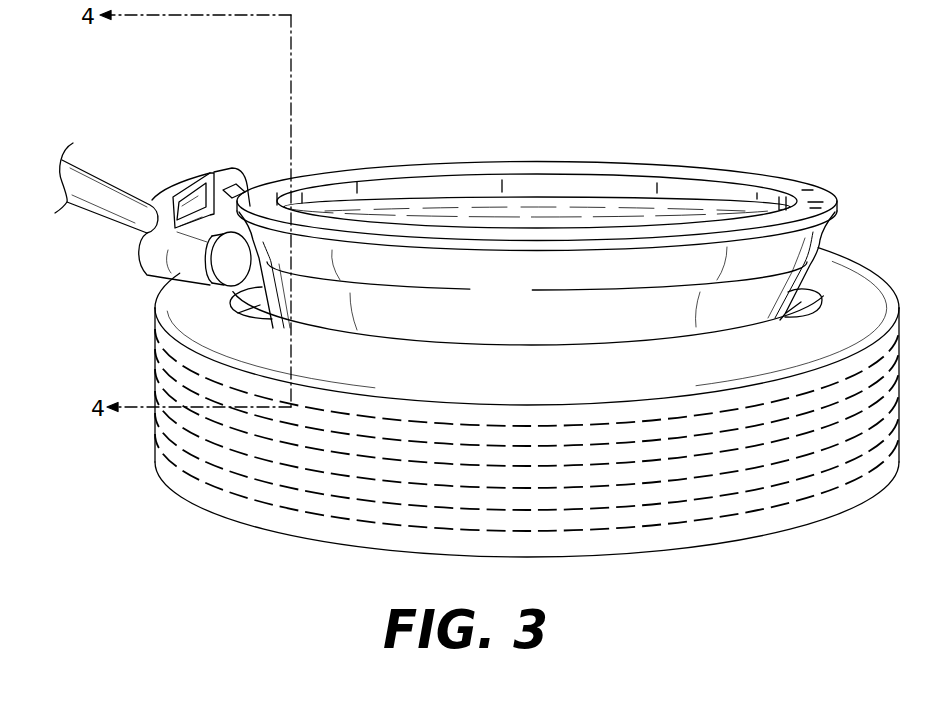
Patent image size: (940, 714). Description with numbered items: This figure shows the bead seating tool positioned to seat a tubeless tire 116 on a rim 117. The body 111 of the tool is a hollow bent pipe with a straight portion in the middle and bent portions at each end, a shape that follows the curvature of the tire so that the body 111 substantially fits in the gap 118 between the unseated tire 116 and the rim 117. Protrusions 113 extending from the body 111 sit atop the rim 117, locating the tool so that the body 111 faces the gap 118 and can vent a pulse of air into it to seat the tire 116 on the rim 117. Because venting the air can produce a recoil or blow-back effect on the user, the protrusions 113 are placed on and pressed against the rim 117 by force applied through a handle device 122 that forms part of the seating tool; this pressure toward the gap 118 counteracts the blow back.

The body 111 is at (157, 270).
The protrusions 113 is at (243, 167).
The tire 116 is at (568, 384).
The rim 117 is at (526, 307).
The gap 118 is at (802, 300).
The handle device 122 is at (214, 171).